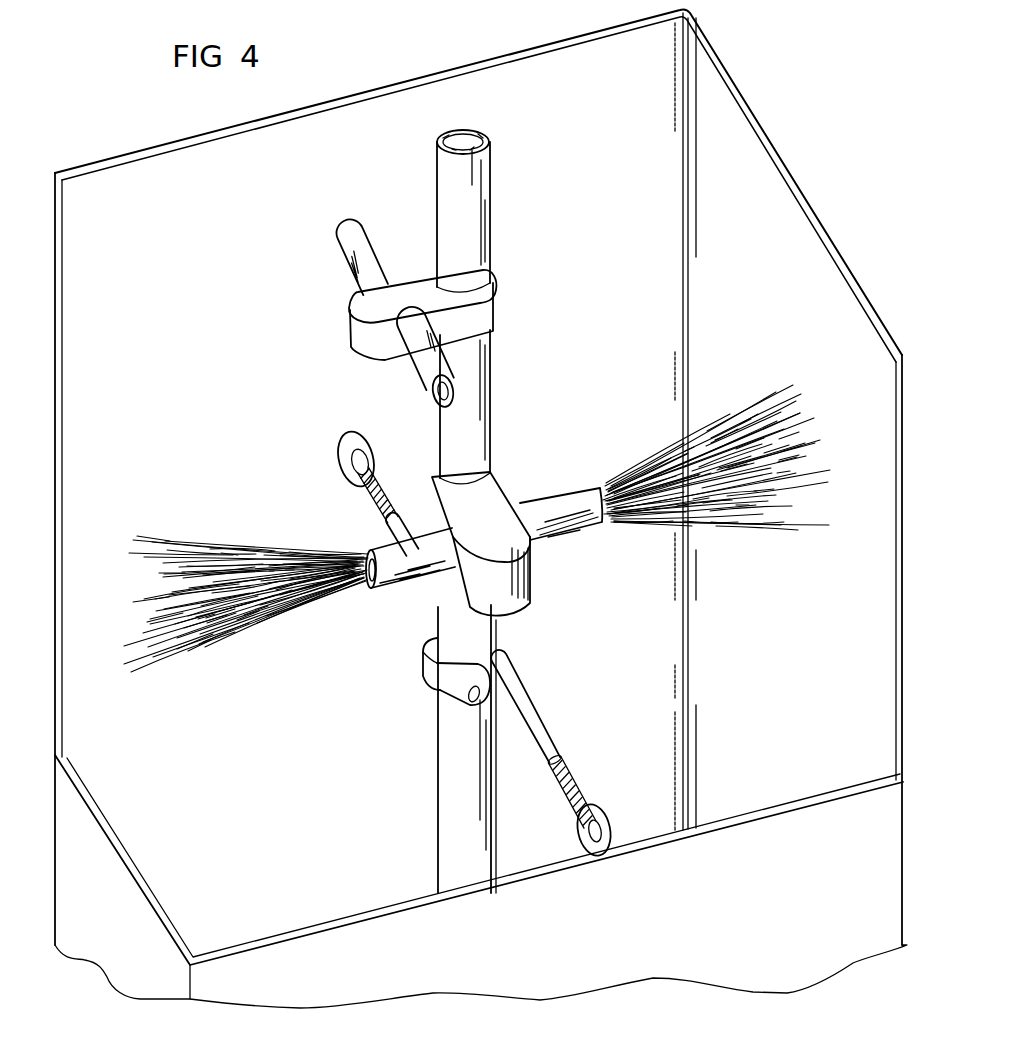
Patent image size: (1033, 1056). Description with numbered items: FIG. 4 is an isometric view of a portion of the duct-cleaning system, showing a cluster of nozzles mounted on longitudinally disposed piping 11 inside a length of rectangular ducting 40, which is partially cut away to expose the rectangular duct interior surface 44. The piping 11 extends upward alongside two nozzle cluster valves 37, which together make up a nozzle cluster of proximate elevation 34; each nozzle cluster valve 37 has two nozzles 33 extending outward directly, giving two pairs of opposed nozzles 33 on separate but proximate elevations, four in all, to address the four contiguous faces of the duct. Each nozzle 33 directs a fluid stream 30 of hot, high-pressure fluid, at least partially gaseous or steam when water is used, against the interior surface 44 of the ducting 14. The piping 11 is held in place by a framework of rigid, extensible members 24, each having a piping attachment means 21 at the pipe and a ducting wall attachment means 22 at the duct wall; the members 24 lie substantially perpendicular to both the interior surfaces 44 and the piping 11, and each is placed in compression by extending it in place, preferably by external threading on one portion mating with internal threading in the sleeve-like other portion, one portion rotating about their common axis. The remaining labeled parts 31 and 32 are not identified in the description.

The piping 11 is at (482, 218).
The ducting 14 is at (815, 907).
The piping attachment means 21 is at (516, 690).
The ducting wall attachment means 22 is at (352, 440).
The rigid, extensible member 24 is at (389, 522).
The fluid stream 30 is at (228, 637).
The clamp block 31 is at (484, 313).
The nozzle orifice 32 is at (436, 394).
The nozzle 33 is at (354, 258).
The nozzle cluster of proximate elevation 34 is at (408, 440).
The nozzle cluster valve 37 is at (363, 338).
The ducting 40 is at (538, 46).
The rectangular duct interior surface 44 is at (166, 163).